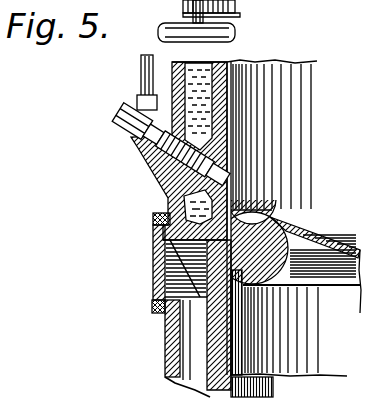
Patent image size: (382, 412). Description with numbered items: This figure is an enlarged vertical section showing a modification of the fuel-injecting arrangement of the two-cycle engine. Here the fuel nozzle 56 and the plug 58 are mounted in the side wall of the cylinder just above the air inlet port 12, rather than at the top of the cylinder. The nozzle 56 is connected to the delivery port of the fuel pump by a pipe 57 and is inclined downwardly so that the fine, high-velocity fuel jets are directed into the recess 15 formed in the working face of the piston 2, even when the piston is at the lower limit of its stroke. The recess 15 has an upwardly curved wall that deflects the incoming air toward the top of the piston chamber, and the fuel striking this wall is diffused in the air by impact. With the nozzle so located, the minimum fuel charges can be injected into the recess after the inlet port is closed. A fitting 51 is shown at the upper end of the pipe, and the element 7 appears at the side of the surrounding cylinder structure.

The piston 2 is at (330, 238).
The cylinder 7 is at (304, 229).
The air inlet port 12 is at (158, 264).
The recess 15 is at (254, 238).
The fitting 51 is at (240, 5).
The nozzle 56 is at (232, 178).
The pipe 57 is at (140, 68).
The plug 58 is at (138, 145).